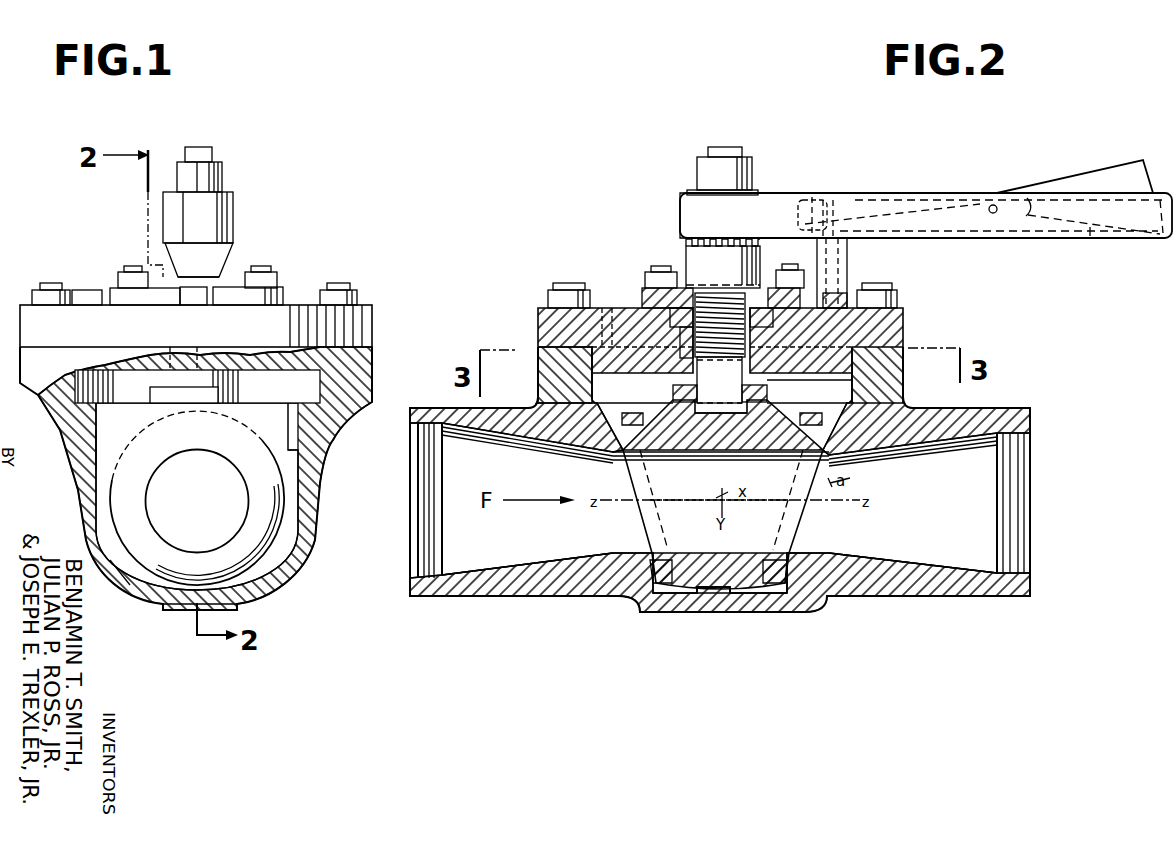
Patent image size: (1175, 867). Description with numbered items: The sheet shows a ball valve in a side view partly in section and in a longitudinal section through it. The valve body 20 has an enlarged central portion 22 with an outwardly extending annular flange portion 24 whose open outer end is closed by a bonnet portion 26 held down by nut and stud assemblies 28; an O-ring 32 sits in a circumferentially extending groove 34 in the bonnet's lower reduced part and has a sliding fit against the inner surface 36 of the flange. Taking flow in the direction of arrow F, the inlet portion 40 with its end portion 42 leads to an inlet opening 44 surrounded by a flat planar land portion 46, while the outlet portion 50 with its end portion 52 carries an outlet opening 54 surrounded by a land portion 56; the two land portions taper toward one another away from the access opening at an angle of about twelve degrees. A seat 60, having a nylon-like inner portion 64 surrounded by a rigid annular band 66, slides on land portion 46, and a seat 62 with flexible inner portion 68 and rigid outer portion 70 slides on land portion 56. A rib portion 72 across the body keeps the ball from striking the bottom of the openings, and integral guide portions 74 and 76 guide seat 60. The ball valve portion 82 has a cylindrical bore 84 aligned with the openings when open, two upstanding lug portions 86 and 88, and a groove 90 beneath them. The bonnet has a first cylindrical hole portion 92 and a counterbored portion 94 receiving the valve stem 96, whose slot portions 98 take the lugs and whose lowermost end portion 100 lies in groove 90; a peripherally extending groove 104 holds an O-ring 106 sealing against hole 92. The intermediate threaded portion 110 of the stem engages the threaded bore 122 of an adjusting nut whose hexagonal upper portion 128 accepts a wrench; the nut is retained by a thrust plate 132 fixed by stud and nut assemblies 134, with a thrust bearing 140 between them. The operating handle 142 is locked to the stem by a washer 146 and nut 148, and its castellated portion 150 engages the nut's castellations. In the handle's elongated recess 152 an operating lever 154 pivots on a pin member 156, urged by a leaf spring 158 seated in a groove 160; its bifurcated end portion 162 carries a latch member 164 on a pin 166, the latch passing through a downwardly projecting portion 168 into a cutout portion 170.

In FIG. 1, the valve body 20 is at (346, 437).
In FIG. 2, the valve body 20 is at (998, 402).
In FIG. 2, the enlarged central portion 22 is at (725, 612).
In FIG. 1, the annular flange portion 24 is at (372, 345).
In FIG. 2, the annular flange portion 24 is at (540, 366).
In FIG. 1, the bonnet portion 26 is at (372, 312).
In FIG. 2, the bonnet portion 26 is at (903, 318).
In FIG. 1, the nut and stud assemblies 28 is at (42, 283).
In FIG. 2, the nut and stud assemblies 28 is at (560, 282).
In FIG. 1, the O-ring 32 is at (378, 401).
In FIG. 2, the O-ring 32 is at (545, 352).
In FIG. 2, the circumferentially extending groove 34 is at (607, 313).
In FIG. 2, the inner surface 36 is at (903, 368).
In FIG. 2, the inlet portion 40 is at (517, 597).
In FIG. 2, the end portion 42 is at (412, 590).
In FIG. 2, the inlet opening 44 is at (615, 470).
In FIG. 1, the land portion 46 is at (268, 416).
In FIG. 2, the land portion 46 is at (623, 423).
In FIG. 2, the outlet portion 50 is at (960, 597).
In FIG. 2, the end portion 52 is at (1028, 440).
In FIG. 2, the outlet opening 54 is at (840, 458).
In FIG. 2, the land portion 56 is at (828, 420).
In FIG. 1, the seat 60 is at (262, 568).
In FIG. 2, the seat 60 is at (693, 452).
In FIG. 2, the seat 62 is at (778, 456).
In FIG. 2, the inner portion 64 is at (648, 565).
In FIG. 2, the annular band 66 is at (680, 568).
In FIG. 2, the inner portion 68 is at (790, 568).
In FIG. 2, the outer portion 70 is at (808, 596).
In FIG. 1, the rib portion 72 is at (163, 592).
In FIG. 2, the rib portion 72 is at (697, 593).
In FIG. 1, the guide portion 74 is at (100, 447).
In FIG. 1, the guide portion 76 is at (300, 455).
In FIG. 1, the ball valve portion 82 is at (145, 565).
In FIG. 2, the ball valve portion 82 is at (752, 595).
In FIG. 1, the cylindrical bore 84 is at (165, 463).
In FIG. 2, the cylindrical bore 84 is at (720, 513).
In FIG. 2, the lug portion 86 is at (722, 388).
In FIG. 2, the lug portion 88 is at (768, 389).
In FIG. 2, the groove 90 is at (750, 405).
In FIG. 2, the first cylindrical hole portion 92 is at (770, 352).
In FIG. 2, the counterbored portion 94 is at (775, 324).
In FIG. 2, the valve stem 96 is at (680, 345).
In FIG. 2, the slot portions 98 is at (700, 393).
In FIG. 2, the lowermost end portion 100 is at (722, 415).
In FIG. 2, the peripherally extending groove 104 is at (809, 386).
In FIG. 2, the O-ring 106 is at (682, 320).
In FIG. 2, the intermediate threaded portion 110 is at (765, 320).
In FIG. 2, the threaded bore 122 is at (668, 322).
In FIG. 2, the upper portion 128 is at (722, 256).
In FIG. 2, the thrust plate 132 is at (642, 278).
In FIG. 2, the stud and nut assemblies 134 is at (653, 266).
In FIG. 2, the thrust bearing 140 is at (779, 264).
In FIG. 2, the operating handle 142 is at (862, 193).
In FIG. 2, the washer 146 is at (755, 185).
In FIG. 2, the nut 148 is at (745, 162).
In FIG. 2, the castellated portion 150 is at (705, 236).
In FIG. 2, the elongated recess 152 is at (825, 192).
In FIG. 2, the operating lever 154 is at (1065, 178).
In FIG. 2, the pin member 156 is at (990, 205).
In FIG. 2, the leaf spring 158 is at (1092, 238).
In FIG. 2, the groove 160 is at (1030, 195).
In FIG. 2, the end portion 162 is at (790, 212).
In FIG. 2, the latch member 164 is at (840, 254).
In FIG. 2, the pin 166 is at (820, 205).
In FIG. 2, the downwardly projecting portion 168 is at (848, 270).
In FIG. 2, the cutout portion 170 is at (833, 308).